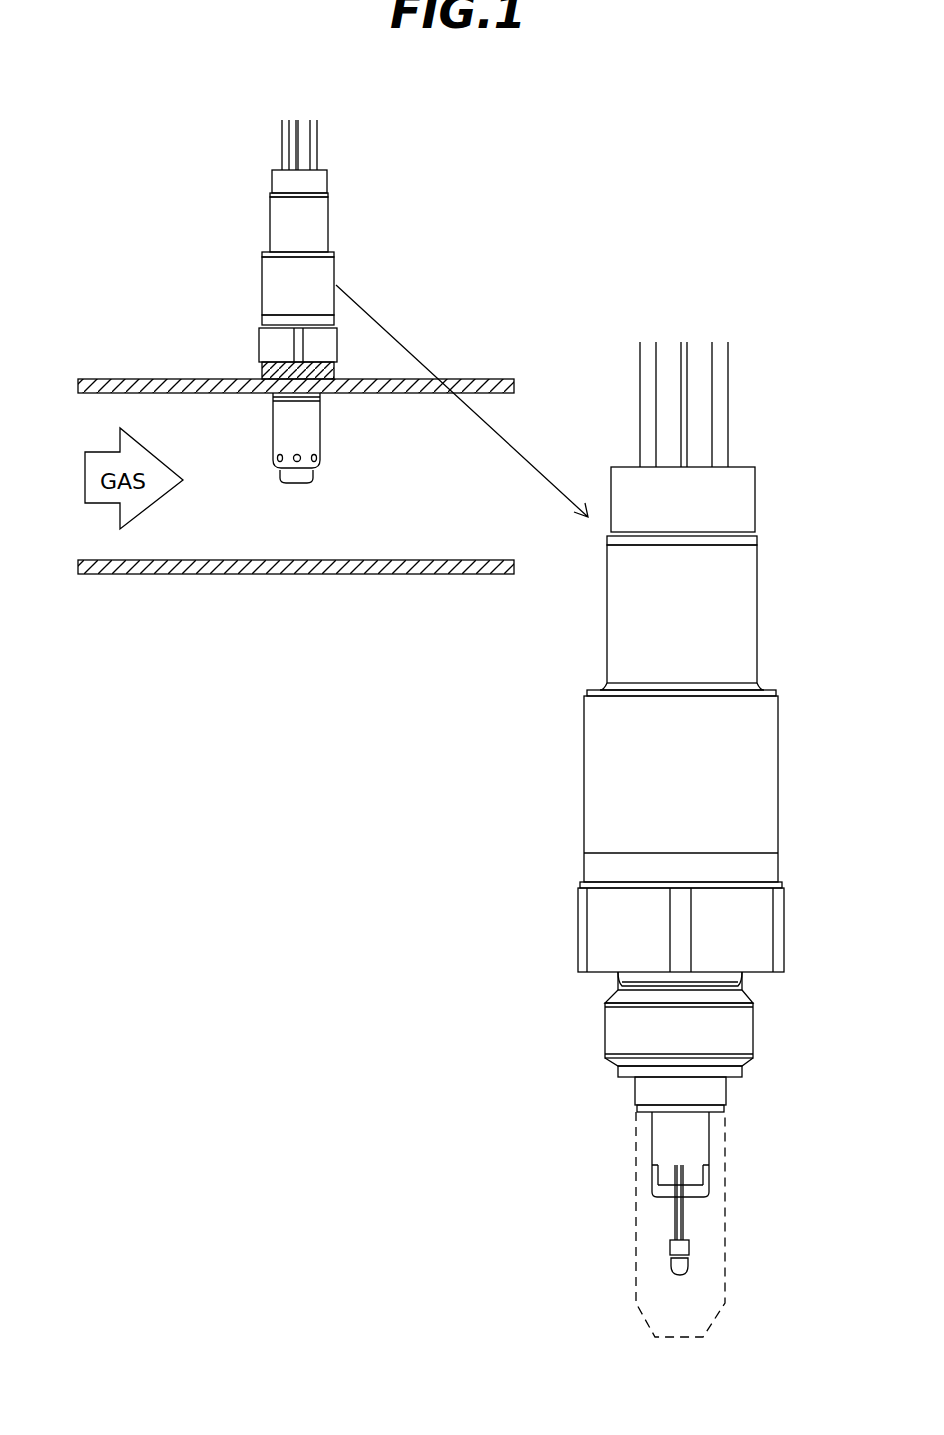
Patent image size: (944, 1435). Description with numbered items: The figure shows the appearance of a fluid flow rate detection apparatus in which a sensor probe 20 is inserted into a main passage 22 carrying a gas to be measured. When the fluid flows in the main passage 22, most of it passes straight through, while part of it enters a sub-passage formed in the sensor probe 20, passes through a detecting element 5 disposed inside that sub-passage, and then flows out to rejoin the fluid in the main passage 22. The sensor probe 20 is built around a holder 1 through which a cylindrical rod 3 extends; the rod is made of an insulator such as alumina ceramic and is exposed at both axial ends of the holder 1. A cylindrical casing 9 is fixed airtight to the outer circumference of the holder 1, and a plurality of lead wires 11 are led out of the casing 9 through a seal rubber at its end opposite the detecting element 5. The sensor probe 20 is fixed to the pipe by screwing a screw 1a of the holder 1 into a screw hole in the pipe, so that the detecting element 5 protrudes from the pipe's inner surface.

The holder 1 is at (750, 930).
The screw 1a is at (755, 1028).
The cylindrical rod 3 is at (658, 1142).
The detecting element 5 is at (690, 1248).
The casing 9 is at (605, 778).
The lead wires 11 is at (720, 408).
The sensor probe 20 is at (275, 280).
The main passage 22 is at (176, 420).